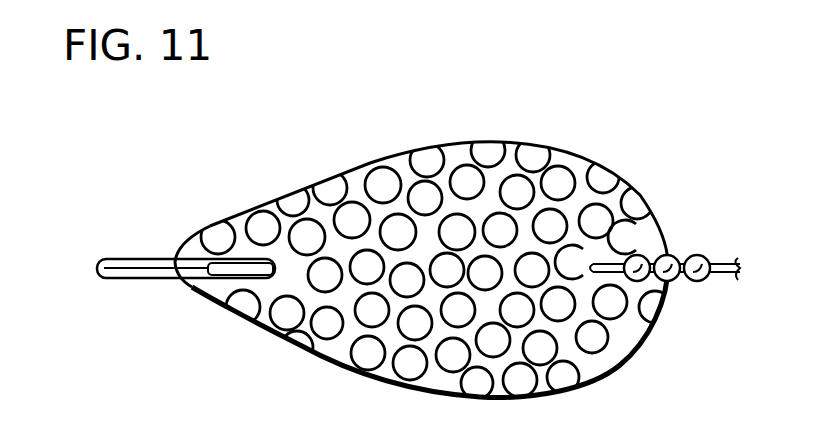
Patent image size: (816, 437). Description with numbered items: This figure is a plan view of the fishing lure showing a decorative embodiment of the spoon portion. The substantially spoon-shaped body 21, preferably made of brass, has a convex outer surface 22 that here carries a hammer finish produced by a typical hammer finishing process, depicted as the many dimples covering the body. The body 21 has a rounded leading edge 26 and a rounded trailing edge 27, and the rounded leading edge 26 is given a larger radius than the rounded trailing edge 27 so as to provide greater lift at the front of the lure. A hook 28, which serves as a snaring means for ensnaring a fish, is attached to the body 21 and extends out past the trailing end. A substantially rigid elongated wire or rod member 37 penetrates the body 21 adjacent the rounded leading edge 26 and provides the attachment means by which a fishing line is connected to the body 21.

The spoon-shaped body 21 is at (294, 196).
The convex outer surface 22 is at (388, 202).
The rounded leading edge 26 is at (670, 247).
The rounded trailing edge 27 is at (175, 287).
The hook 28 is at (141, 260).
The rod member 37 is at (712, 277).